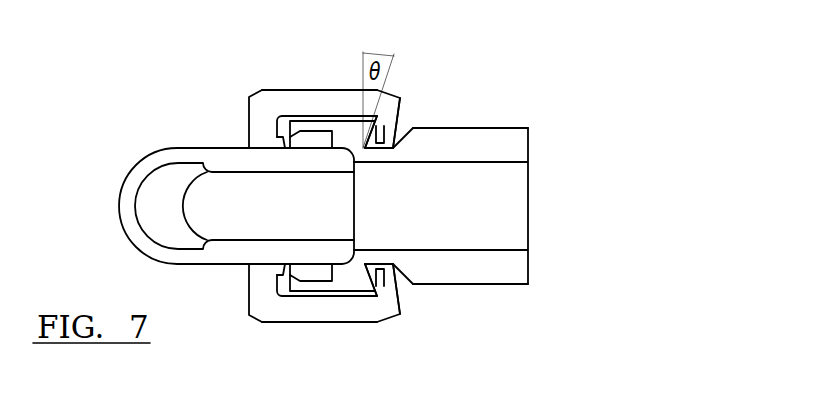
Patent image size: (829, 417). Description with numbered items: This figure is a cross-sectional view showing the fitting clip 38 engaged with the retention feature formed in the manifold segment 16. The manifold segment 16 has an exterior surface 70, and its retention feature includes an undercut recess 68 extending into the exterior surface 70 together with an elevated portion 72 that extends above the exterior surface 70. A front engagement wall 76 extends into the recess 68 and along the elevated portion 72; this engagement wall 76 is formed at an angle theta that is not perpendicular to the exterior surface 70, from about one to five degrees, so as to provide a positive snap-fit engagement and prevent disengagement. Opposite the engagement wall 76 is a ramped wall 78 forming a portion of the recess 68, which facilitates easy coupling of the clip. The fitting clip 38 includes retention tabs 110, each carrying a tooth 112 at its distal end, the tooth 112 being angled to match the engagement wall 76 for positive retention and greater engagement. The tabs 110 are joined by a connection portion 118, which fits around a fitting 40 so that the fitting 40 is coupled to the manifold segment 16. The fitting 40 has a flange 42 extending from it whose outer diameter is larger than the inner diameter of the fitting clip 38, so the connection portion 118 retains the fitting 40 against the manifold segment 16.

The manifold segment 16 is at (528, 128).
The fitting clip 38 is at (248, 107).
The fitting 40 is at (132, 168).
The flange 42 is at (277, 142).
The recess 68 is at (390, 138).
The exterior surface 70 is at (503, 128).
The elevated portion 72 is at (353, 132).
The engagement wall 76 is at (376, 126).
The ramped wall 78 is at (405, 140).
The retention tab 110 is at (308, 107).
The tooth 112 is at (386, 283).
The connection portion 118 is at (263, 283).